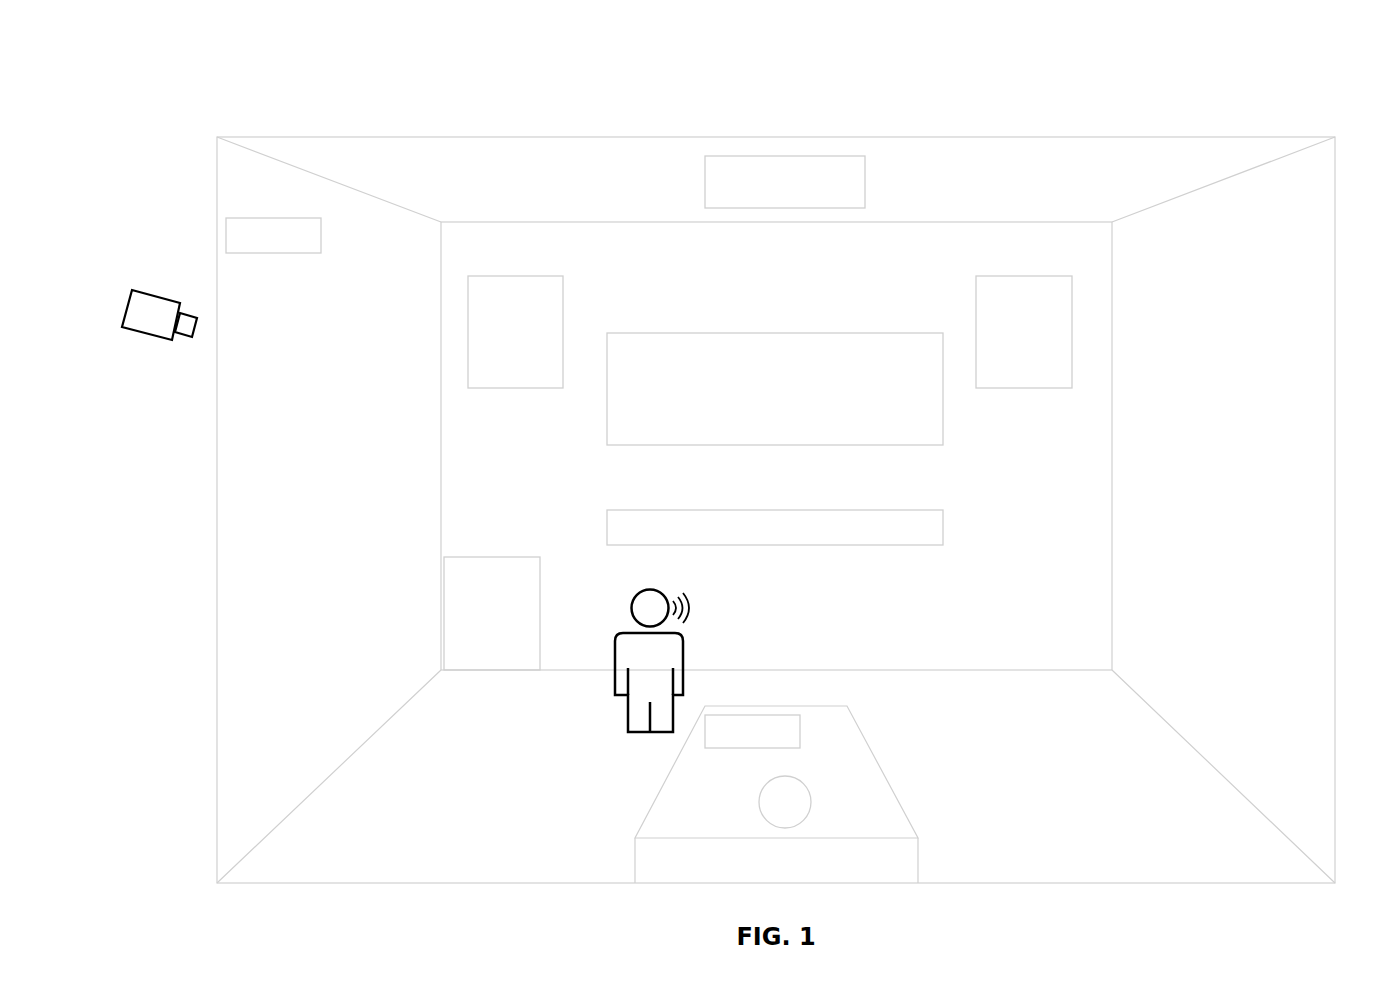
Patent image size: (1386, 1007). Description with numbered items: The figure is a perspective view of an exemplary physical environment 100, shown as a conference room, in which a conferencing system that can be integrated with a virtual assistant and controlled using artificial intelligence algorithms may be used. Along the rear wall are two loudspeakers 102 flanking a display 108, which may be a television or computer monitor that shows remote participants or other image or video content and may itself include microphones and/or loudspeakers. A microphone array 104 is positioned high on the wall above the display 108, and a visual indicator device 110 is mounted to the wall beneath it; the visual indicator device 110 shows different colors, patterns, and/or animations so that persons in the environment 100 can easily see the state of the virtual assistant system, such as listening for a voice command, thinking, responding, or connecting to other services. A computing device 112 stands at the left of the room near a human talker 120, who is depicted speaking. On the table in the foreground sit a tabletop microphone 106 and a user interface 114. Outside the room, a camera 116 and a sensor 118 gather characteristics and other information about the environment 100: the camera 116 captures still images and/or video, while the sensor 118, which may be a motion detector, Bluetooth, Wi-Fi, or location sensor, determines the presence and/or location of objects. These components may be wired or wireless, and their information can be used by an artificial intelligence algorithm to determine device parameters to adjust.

The physical environment 100 is at (189, 66).
The loudspeakers 102 is at (545, 389).
The microphone array 104 is at (705, 192).
The tabletop microphone 106 is at (758, 802).
The display 108 is at (833, 446).
The visual indicator device 110 is at (885, 546).
The computing device 112 is at (483, 556).
The user interface 114 is at (793, 750).
The camera 116 is at (178, 302).
The sensor 118 is at (309, 254).
The human talker 120 is at (627, 633).